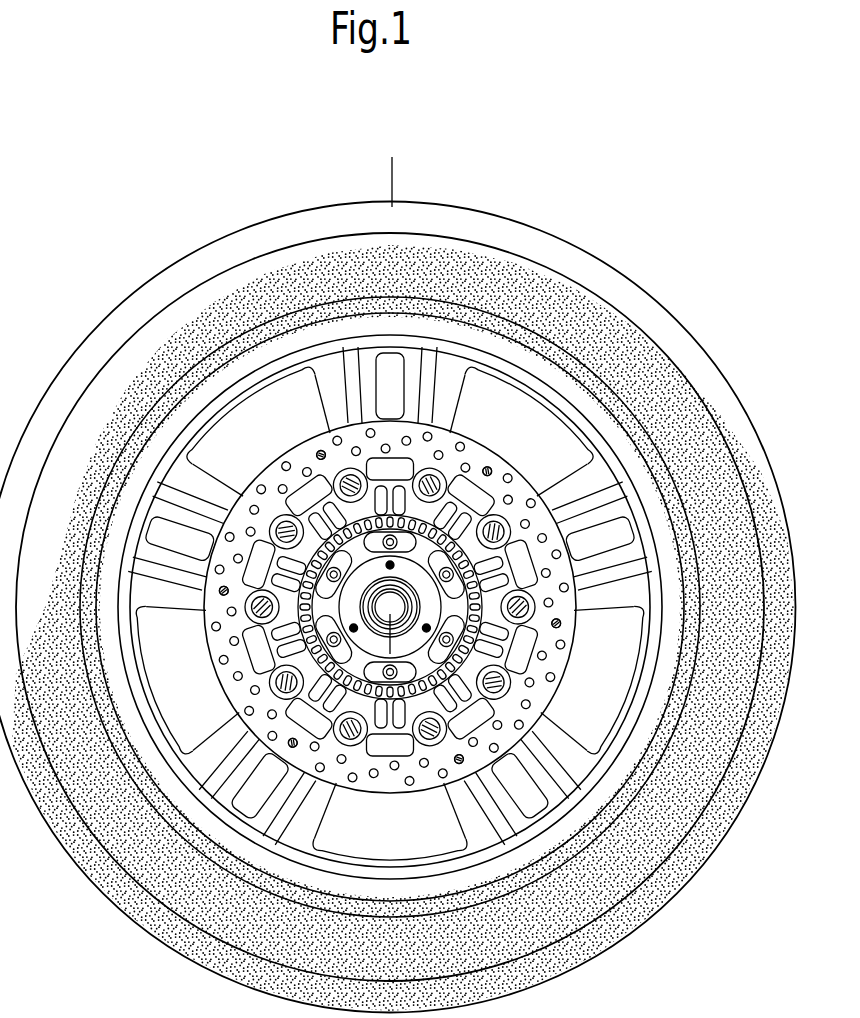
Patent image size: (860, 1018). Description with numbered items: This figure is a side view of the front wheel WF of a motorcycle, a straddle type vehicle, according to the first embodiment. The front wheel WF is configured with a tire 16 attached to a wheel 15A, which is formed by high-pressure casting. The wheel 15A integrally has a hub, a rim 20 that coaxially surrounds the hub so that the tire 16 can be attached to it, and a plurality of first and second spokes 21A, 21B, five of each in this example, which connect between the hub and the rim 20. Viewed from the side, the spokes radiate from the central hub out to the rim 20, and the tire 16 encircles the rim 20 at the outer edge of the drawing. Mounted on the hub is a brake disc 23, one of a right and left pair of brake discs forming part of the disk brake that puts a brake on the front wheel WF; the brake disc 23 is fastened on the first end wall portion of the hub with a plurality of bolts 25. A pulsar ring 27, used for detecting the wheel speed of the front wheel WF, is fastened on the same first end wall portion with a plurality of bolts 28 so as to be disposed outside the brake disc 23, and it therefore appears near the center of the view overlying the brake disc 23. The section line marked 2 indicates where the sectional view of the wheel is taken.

The front wheel WF is at (524, 213).
The tire 16 is at (565, 252).
The wheel 15A is at (590, 371).
The rim 20 is at (518, 352).
The first spokes 21A is at (318, 378).
The second spokes 21B is at (453, 380).
The brake disc 23 is at (628, 526).
The bolts 25 is at (412, 737).
The pulsar ring 27 is at (330, 566).
The bolts 28 is at (390, 560).
The section line 2 is at (373, 176).